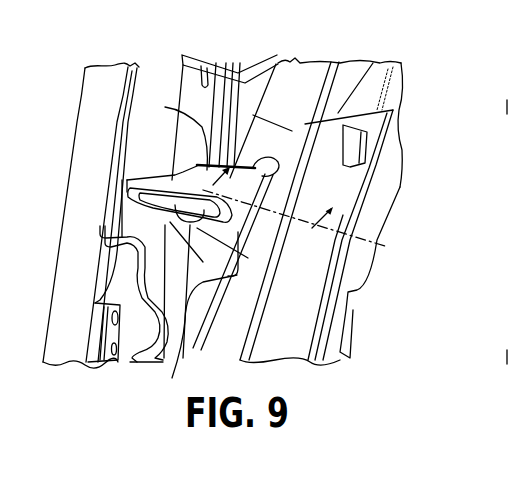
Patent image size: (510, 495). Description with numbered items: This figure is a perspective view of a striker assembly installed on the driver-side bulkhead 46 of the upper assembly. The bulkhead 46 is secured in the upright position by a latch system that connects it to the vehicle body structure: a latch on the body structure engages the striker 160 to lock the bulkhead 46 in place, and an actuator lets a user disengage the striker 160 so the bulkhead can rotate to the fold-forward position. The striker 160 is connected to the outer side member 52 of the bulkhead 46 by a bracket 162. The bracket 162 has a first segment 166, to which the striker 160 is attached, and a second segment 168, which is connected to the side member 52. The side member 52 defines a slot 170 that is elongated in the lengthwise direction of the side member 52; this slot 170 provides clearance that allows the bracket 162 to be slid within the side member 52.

The bulkhead 46 is at (340, 182).
The outer side member 52 is at (293, 87).
The striker 160 is at (145, 205).
The bracket 162 is at (142, 168).
The first segment 166 is at (168, 108).
The second segment 168 is at (250, 225).
The slot 170 is at (172, 376).